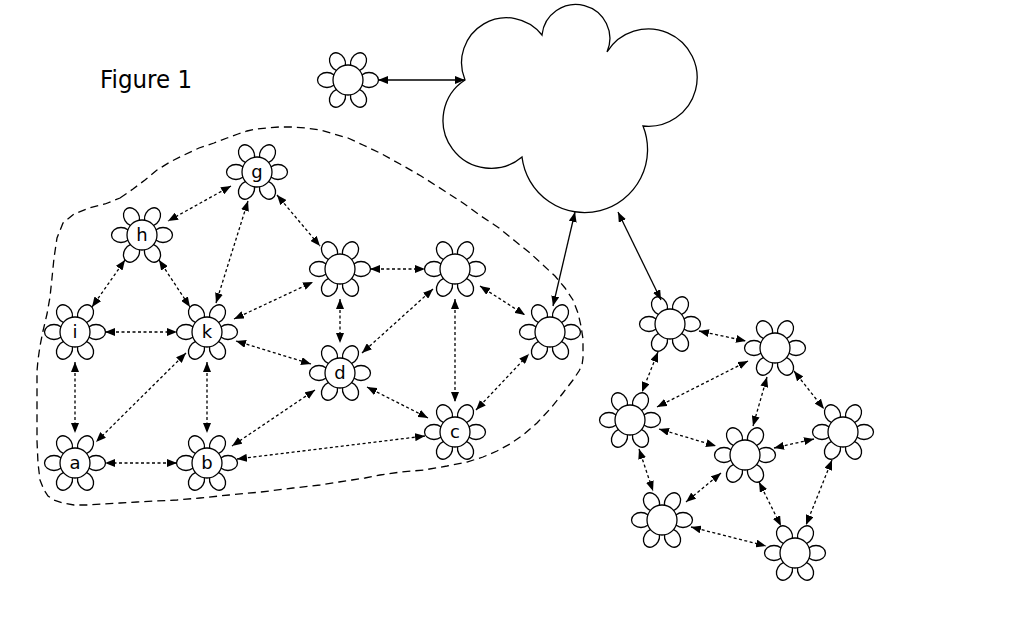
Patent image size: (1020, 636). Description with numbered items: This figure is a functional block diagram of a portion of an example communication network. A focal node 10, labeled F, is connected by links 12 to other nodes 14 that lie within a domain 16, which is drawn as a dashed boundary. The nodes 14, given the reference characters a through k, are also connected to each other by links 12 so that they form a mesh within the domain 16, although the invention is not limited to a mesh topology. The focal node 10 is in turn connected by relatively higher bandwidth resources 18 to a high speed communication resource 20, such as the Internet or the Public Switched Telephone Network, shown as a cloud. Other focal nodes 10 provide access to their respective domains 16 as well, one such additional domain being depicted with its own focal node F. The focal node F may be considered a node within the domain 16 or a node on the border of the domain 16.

The focal node 10 is at (320, 80).
The links 12 is at (455, 383).
The nodes 14 is at (310, 268).
The domain 16 is at (137, 185).
The higher bandwidth resources 18 is at (557, 297).
The high speed communication resource 20 is at (460, 67).